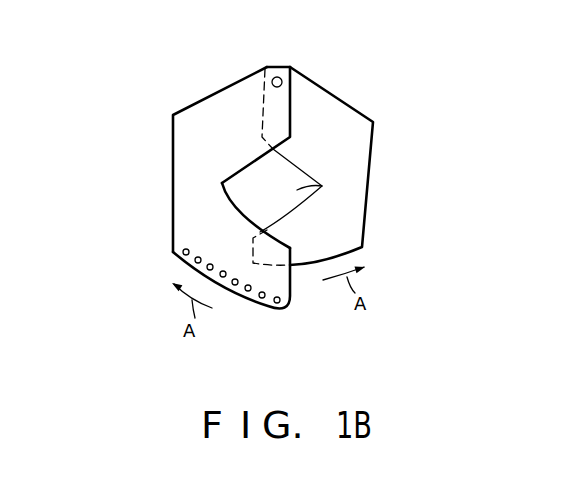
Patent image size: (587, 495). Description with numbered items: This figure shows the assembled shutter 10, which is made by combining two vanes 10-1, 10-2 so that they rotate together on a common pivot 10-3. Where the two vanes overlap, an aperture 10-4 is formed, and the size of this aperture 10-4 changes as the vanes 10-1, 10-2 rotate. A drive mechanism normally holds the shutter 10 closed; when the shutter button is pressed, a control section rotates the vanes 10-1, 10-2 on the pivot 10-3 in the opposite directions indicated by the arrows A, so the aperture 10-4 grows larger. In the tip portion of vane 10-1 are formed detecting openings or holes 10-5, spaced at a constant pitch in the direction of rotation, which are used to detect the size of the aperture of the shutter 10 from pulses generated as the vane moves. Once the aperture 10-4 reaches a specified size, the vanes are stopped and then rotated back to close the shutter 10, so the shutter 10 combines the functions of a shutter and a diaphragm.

The shutter 10 is at (273, 188).
The vane 10-1 is at (212, 100).
The vane 10-2 is at (338, 105).
The pivot 10-3 is at (275, 66).
The aperture 10-4 is at (322, 186).
The detecting openings or holes 10-5 is at (259, 299).